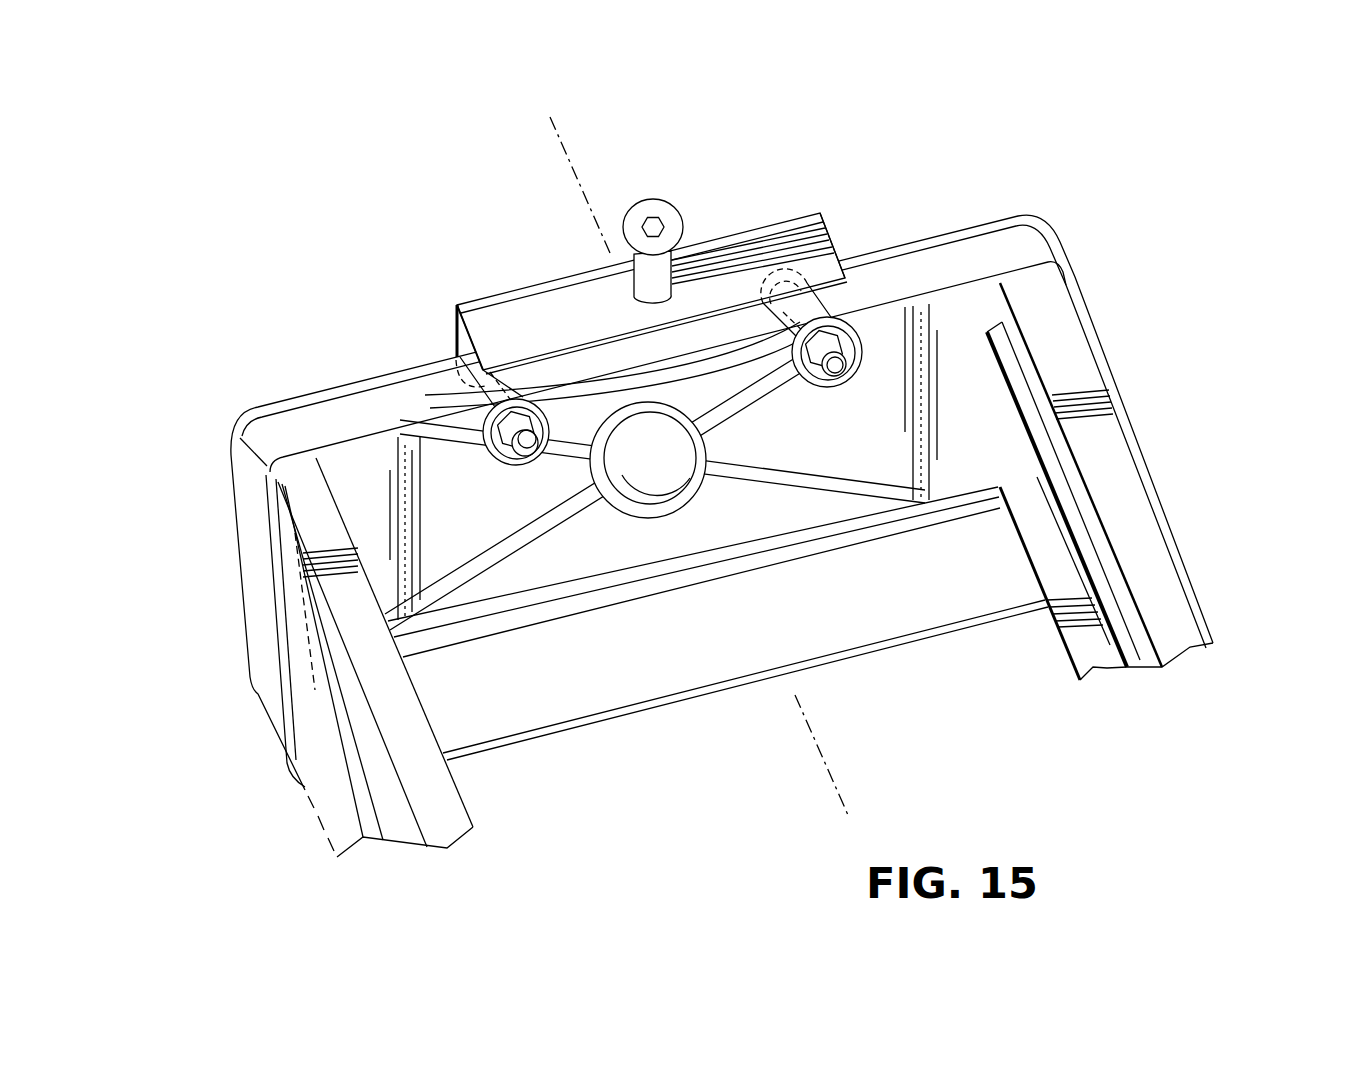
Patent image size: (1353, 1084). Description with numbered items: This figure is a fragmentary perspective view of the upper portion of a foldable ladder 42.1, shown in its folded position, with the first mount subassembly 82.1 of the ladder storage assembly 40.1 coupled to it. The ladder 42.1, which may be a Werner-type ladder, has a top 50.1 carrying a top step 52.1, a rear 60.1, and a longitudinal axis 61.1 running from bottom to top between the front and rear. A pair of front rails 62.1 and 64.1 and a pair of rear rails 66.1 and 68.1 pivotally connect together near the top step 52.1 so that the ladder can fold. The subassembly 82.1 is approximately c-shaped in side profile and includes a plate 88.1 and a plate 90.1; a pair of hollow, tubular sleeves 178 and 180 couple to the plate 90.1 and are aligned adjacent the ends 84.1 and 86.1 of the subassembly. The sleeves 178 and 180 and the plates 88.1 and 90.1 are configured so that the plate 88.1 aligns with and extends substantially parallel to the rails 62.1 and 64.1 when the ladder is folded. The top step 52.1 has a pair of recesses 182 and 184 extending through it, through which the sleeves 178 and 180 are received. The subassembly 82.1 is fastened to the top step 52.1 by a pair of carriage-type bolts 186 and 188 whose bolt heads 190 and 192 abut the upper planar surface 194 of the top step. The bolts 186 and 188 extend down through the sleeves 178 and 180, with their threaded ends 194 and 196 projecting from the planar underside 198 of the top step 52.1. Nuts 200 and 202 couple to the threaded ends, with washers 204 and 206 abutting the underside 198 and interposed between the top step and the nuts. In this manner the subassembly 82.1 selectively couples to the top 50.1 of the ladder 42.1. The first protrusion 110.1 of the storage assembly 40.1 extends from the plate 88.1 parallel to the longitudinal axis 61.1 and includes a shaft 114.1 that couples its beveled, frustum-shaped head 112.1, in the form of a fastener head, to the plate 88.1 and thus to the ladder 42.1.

The ladder storage assembly 40.1 is at (617, 235).
The ladder 42.1 is at (1156, 484).
The top 50.1 is at (1064, 239).
The top step 52.1 is at (248, 541).
The rear 60.1 is at (320, 820).
The longitudinal axis 61.1 is at (546, 121).
The front rail 62.1 is at (292, 589).
The front rail 64.1 is at (1165, 566).
The rear rail 66.1 is at (312, 738).
The rear rail 68.1 is at (1080, 640).
The first mount subassembly 82.1 is at (617, 269).
The end of subassembly 84.1 is at (456, 348).
The end of subassembly 86.1 is at (832, 234).
The plate 88.1 is at (514, 332).
The plate 90.1 is at (455, 332).
The first protrusion 110.1 is at (614, 215).
The head 112.1 is at (625, 222).
The shaft 114.1 is at (640, 286).
The sleeve 178 is at (500, 383).
The sleeve 180 is at (830, 313).
The recess 182 is at (540, 358).
The recess 184 is at (850, 320).
The carriage-type bolt 186 is at (530, 458).
The carriage-type bolt 188 is at (840, 388).
The bolt head 190 is at (487, 347).
The bolt head 192 is at (793, 277).
The upper planar surface 194 is at (282, 401).
The threaded end 196 is at (835, 377).
The planar underside 198 is at (951, 455).
The nut 200 is at (493, 448).
The nut 202 is at (845, 381).
The washer 204 is at (497, 462).
The washer 206 is at (800, 367).